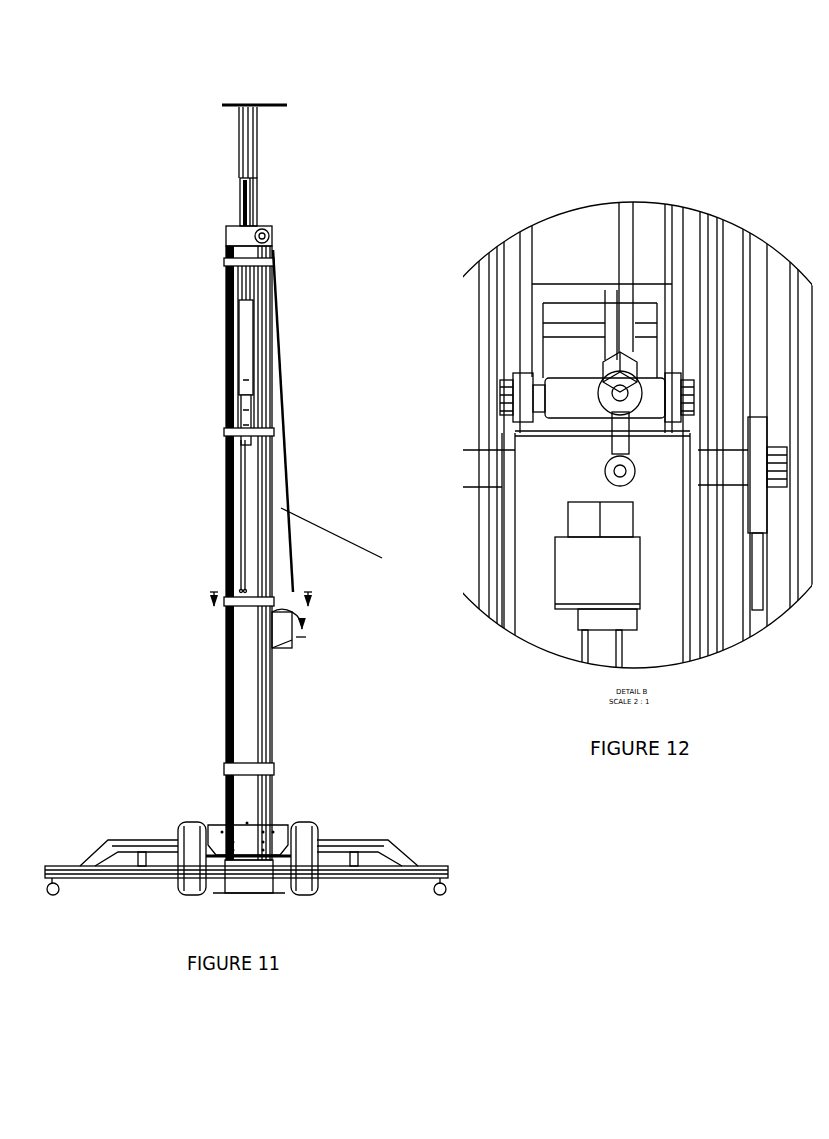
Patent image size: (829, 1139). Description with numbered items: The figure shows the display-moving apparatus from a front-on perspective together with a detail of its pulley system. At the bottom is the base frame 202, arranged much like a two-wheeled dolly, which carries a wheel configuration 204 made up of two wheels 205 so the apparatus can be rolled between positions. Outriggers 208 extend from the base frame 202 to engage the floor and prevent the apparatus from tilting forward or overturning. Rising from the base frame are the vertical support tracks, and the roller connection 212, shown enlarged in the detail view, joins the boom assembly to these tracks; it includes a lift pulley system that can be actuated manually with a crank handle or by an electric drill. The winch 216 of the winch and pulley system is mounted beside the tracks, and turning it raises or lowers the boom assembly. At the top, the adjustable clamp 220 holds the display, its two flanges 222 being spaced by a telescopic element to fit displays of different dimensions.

In FIG. 11, the base frame 202 is at (130, 546).
In FIG. 11, the wheel configuration 204 is at (140, 817).
In FIG. 11, the wheels 205 is at (120, 892).
In FIG. 11, the outriggers 208 is at (328, 840).
In FIG. 12, the roller connection 212 is at (484, 220).
In FIG. 11, the winch 216 is at (283, 648).
In FIG. 11, the adjustable clamp 220 is at (252, 178).
In FIG. 11, the flanges 222 is at (252, 103).